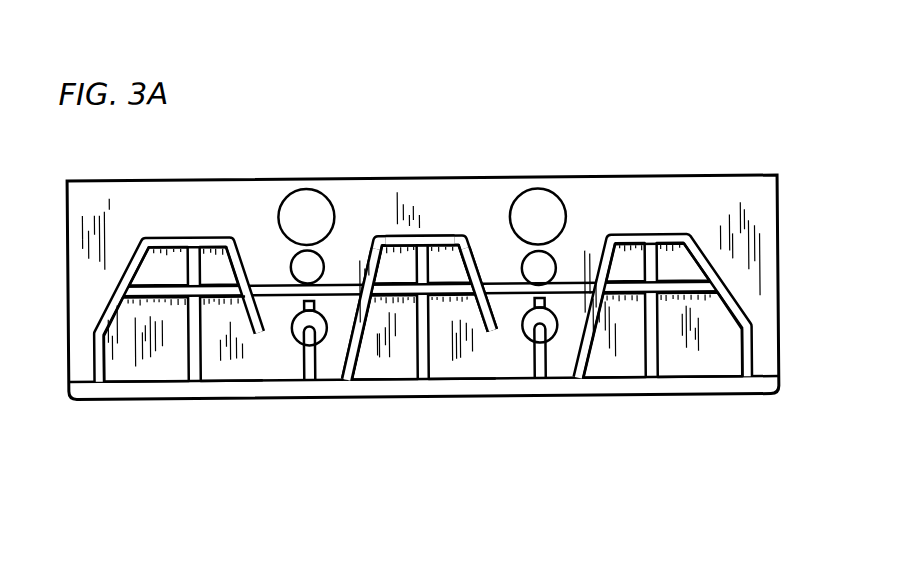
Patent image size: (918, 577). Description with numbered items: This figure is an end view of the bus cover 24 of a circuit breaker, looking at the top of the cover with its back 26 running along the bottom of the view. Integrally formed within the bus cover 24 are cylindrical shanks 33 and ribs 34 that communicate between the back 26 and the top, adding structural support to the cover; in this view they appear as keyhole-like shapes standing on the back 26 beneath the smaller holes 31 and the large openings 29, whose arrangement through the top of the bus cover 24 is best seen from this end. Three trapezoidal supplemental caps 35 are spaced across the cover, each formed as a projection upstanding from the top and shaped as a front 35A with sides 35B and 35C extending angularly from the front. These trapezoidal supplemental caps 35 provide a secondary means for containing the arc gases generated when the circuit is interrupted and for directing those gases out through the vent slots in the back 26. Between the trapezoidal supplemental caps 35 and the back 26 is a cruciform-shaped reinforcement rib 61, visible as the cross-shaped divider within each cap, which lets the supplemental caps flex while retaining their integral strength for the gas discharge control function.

The bus cover 24 is at (826, 330).
The back 26 is at (196, 397).
The large openings 29 is at (284, 202).
The smaller holes 31 is at (298, 258).
The cylindrical shanks 33 is at (525, 339).
The ribs 34 is at (540, 301).
The trapezoidal supplemental caps 35 is at (732, 267).
The front 35A is at (398, 240).
The side 35B is at (482, 250).
The side 35C is at (345, 358).
The cruciform-shaped reinforcement rib 61 is at (145, 287).